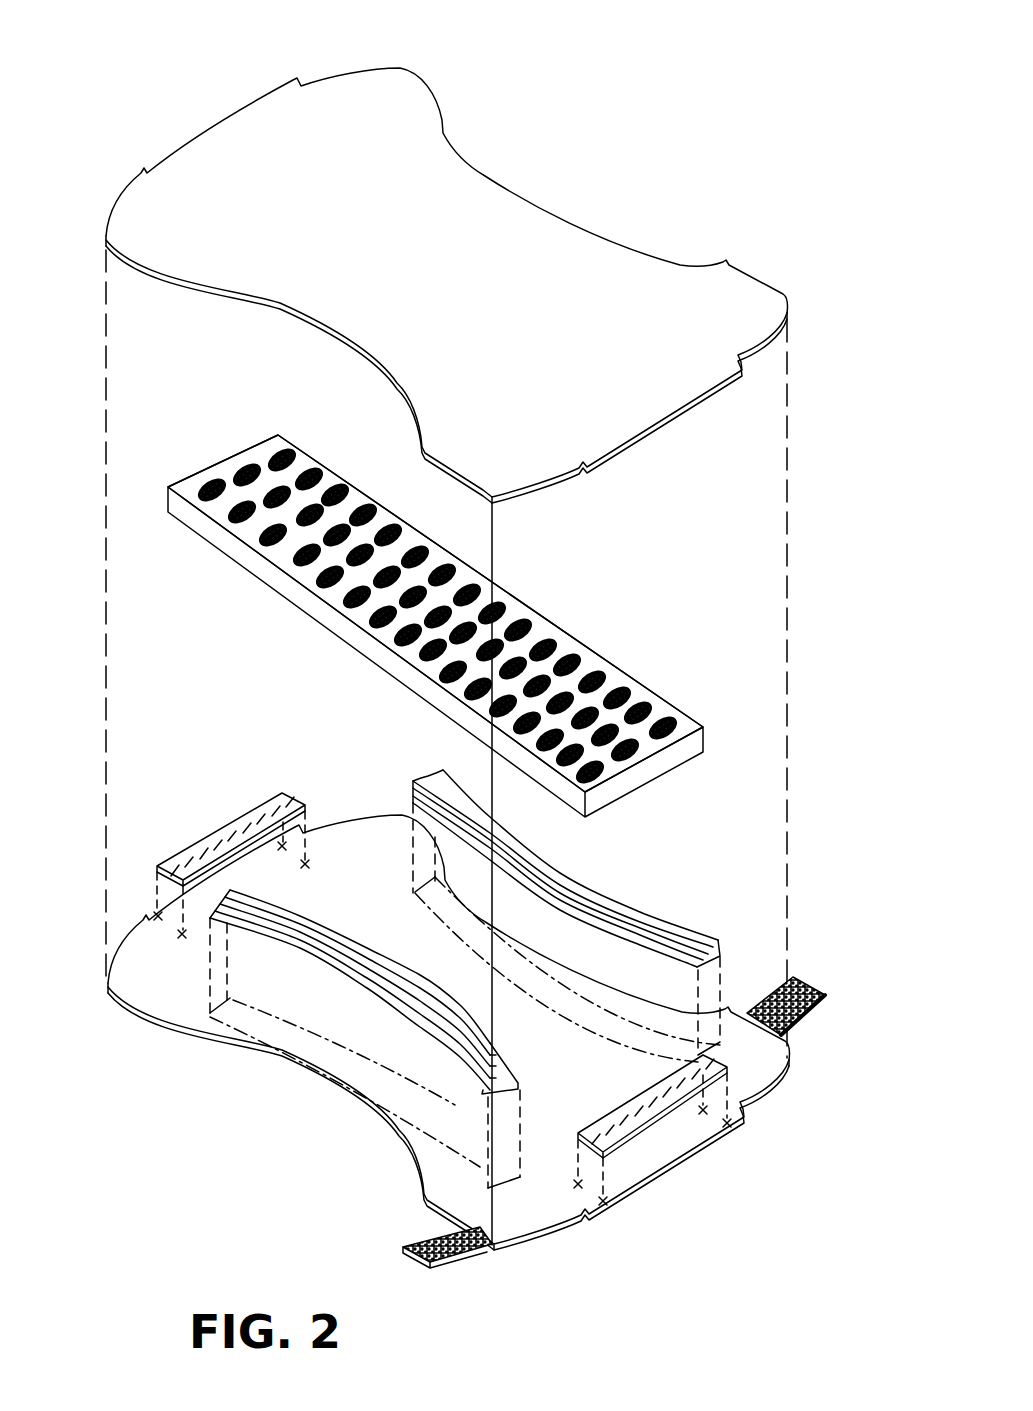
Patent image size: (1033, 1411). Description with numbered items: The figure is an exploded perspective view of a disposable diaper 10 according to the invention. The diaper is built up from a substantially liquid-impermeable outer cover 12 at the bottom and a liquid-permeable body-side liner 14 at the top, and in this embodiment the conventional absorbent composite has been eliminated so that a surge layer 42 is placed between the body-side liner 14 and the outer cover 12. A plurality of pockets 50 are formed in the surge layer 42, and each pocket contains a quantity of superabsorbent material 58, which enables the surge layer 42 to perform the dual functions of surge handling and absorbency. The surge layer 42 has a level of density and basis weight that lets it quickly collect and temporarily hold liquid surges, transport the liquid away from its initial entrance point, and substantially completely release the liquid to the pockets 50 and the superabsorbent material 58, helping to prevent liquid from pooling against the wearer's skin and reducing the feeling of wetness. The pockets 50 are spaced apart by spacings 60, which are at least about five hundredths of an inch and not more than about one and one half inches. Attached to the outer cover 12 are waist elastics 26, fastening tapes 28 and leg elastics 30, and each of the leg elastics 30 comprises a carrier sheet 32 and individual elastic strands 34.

The disposable diaper 10 is at (702, 216).
The outer cover 12 is at (113, 1013).
The body-side liner 14 is at (388, 75).
The waist elastics 26 is at (222, 823).
The fastening tapes 28 is at (800, 1018).
The leg elastics 30 is at (328, 923).
The carrier sheet 32 is at (442, 1045).
The elastic strands 34 is at (362, 975).
The surge layer 42 is at (543, 623).
The pockets 50 is at (663, 717).
The superabsorbent material 58 is at (573, 655).
The spacings 60 is at (493, 590).